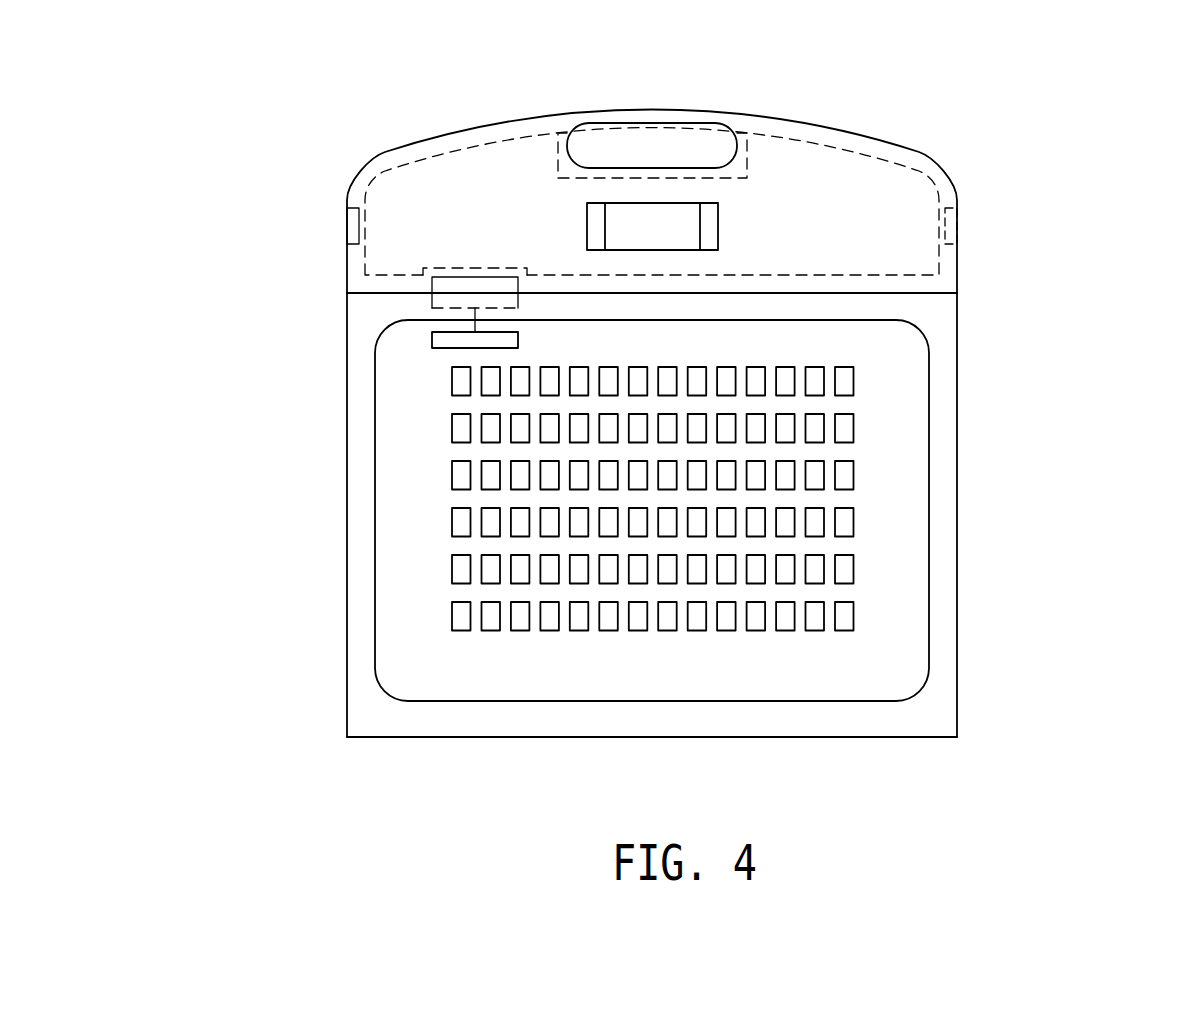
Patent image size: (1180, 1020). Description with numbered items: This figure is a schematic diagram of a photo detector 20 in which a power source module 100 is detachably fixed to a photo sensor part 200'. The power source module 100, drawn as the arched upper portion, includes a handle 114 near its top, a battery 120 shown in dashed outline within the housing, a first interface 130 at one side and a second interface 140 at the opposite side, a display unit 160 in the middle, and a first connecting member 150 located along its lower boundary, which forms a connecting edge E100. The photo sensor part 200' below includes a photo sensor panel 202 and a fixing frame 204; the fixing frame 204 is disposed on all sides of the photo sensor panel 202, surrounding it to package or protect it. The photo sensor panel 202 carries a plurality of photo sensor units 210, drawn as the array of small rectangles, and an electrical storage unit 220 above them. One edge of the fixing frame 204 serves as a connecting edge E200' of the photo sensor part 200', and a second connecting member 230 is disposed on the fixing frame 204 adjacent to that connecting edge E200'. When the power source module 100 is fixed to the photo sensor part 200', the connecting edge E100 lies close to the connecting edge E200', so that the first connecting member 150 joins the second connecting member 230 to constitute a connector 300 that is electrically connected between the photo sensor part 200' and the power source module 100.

The photo detector 20 is at (1145, 773).
The power source module 100 is at (923, 158).
The handle 114 is at (660, 115).
The battery 120 is at (838, 143).
The first interface 130 is at (955, 225).
The second interface 140 is at (347, 228).
The first connecting member 150 is at (450, 275).
The display unit 160 is at (718, 226).
The connector 300 is at (360, 293).
The second connecting member 230 is at (442, 303).
The electrical storage unit 220 is at (432, 339).
The photo sensor units 210 is at (452, 380).
The photo sensor part 200' is at (703, 515).
The photo sensor panel 202 is at (929, 434).
The fixing frame 204 is at (942, 517).
The connecting edge of the power source module E100 is at (925, 292).
The connecting edge of the photo sensor part E200' is at (710, 320).